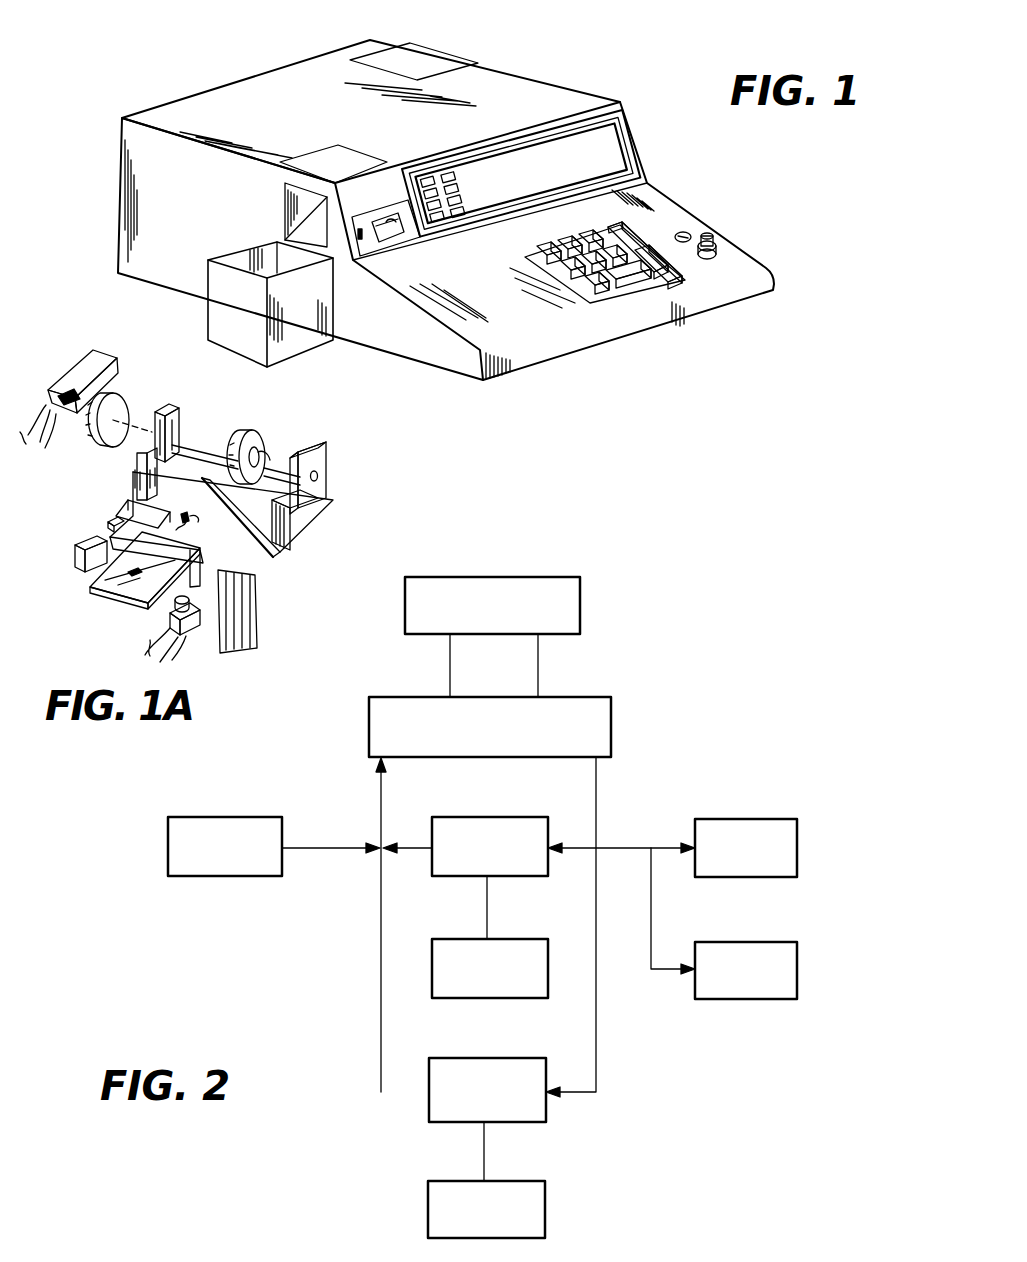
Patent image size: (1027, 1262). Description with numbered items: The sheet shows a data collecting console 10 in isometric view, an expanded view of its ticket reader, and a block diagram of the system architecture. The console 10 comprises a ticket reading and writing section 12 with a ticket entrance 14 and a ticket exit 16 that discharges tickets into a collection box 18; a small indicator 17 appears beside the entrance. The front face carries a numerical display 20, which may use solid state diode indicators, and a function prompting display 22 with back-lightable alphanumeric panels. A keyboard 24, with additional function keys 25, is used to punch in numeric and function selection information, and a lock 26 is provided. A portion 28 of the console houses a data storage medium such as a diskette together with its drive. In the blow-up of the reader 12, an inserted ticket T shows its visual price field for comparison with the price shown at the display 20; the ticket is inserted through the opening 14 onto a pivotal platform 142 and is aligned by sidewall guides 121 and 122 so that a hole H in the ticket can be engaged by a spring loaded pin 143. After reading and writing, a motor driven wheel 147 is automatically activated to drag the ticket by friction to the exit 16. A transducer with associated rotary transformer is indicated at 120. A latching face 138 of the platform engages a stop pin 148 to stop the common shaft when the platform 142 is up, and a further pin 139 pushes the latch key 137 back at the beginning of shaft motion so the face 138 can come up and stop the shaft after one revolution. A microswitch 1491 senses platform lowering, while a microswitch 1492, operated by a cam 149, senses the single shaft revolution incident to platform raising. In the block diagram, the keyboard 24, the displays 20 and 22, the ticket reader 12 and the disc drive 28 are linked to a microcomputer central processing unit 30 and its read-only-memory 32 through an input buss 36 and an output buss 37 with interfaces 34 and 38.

In FIG. 1, the data collecting console 10 is at (262, 100).
In FIG. 1, the ticket reading and writing section 12 is at (418, 249).
In FIG. 1A, the ticket reading and writing section 12 is at (306, 423).
In FIG. 2, the ticket reading and writing section 12 is at (500, 939).
In FIG. 1, the ticket entrance 14 is at (378, 218).
In FIG. 1A, the ticket entrance 14 is at (157, 562).
In FIG. 1, the ticket exit 16 is at (298, 213).
In FIG. 1A, the ticket exit 16 is at (212, 428).
In FIG. 1, the indicator 17 is at (362, 241).
In FIG. 1, the collection box 18 is at (245, 328).
In FIG. 1, the numerical display 20 is at (595, 158).
In FIG. 2, the numerical display 20 is at (730, 819).
In FIG. 1, the function prompting display 22 is at (427, 178).
In FIG. 2, the function prompting display 22 is at (795, 942).
In FIG. 1, the keyboard 24 is at (628, 283).
In FIG. 2, the keyboard 24 is at (232, 817).
In FIG. 1, the function keys 25 is at (672, 262).
In FIG. 1, the lock 26 is at (704, 246).
In FIG. 1, the portion of console housing data storage medium 28 is at (432, 62).
In FIG. 2, the portion of console housing data storage medium 28 is at (505, 1181).
In FIG. 2, the microcomputer central processing unit 30 is at (611, 740).
In FIG. 2, the ROM 32 is at (580, 605).
In FIG. 2, the interface 34 is at (485, 817).
In FIG. 2, the input buss 36 is at (381, 920).
In FIG. 2, the output buss 37 is at (596, 924).
In FIG. 2, the interface 38 is at (495, 1058).
In FIG. 1A, the transducer with associated rotary transformer 120 is at (272, 633).
In FIG. 1A, the sidewall guide 121 is at (117, 525).
In FIG. 1A, the sidewall guide 122 is at (260, 572).
In FIG. 1A, the latch key 137 is at (135, 503).
In FIG. 1A, the latching face 138 is at (238, 422).
In FIG. 1A, the pin 139 is at (140, 447).
In FIG. 1A, the pivotal platform 142 is at (240, 523).
In FIG. 1A, the spring loaded pin 143 is at (188, 520).
In FIG. 1A, the motor driven wheel 147 is at (262, 468).
In FIG. 1A, the stop pin 148 is at (198, 437).
In FIG. 1A, the cam 149 is at (117, 403).
In FIG. 1A, the microswitch 1491 is at (190, 617).
In FIG. 1A, the microswitch 1492 is at (95, 360).
In FIG. 1A, the hole H is at (172, 530).
In FIG. 1A, the ticket T is at (100, 593).